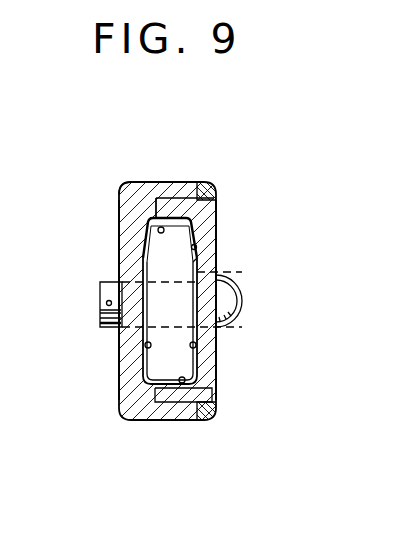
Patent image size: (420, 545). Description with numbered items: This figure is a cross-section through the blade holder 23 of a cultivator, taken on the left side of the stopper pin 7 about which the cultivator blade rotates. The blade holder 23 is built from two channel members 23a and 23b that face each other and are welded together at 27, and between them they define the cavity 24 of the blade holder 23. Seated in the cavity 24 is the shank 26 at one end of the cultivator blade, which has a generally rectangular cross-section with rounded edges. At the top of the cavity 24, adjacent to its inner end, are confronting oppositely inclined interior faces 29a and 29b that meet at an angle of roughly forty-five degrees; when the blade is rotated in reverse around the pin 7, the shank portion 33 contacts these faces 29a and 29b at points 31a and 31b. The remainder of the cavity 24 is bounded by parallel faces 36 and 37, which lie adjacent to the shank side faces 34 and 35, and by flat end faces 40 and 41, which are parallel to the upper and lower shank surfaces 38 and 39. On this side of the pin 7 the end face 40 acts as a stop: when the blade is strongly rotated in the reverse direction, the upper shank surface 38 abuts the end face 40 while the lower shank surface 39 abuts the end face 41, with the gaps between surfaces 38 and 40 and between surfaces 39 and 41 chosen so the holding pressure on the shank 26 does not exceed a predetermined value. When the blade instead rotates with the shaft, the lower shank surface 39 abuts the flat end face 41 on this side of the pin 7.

The stopper pin 7 is at (100, 296).
The blade holder 23 is at (163, 182).
The channel member 23a is at (118, 205).
The channel member 23b is at (216, 232).
The cavity of the blade holder 24 is at (132, 396).
The shank 26 is at (246, 284).
The weld 27 is at (223, 190).
The inclined interior face 29a is at (150, 243).
The inclined interior face 29b is at (200, 248).
The contact point 31a is at (143, 235).
The contact point 31b is at (205, 216).
The shank portion 33 is at (134, 190).
The shank side face 34 is at (145, 378).
The shank side face 35 is at (198, 372).
The parallel face 36 is at (145, 347).
The parallel face 37 is at (198, 347).
The upper shank surface 38 is at (195, 192).
The lower shank surface 39 is at (163, 398).
The flat end face of the cavity 40 is at (157, 200).
The flat end face of the cavity 41 is at (190, 400).